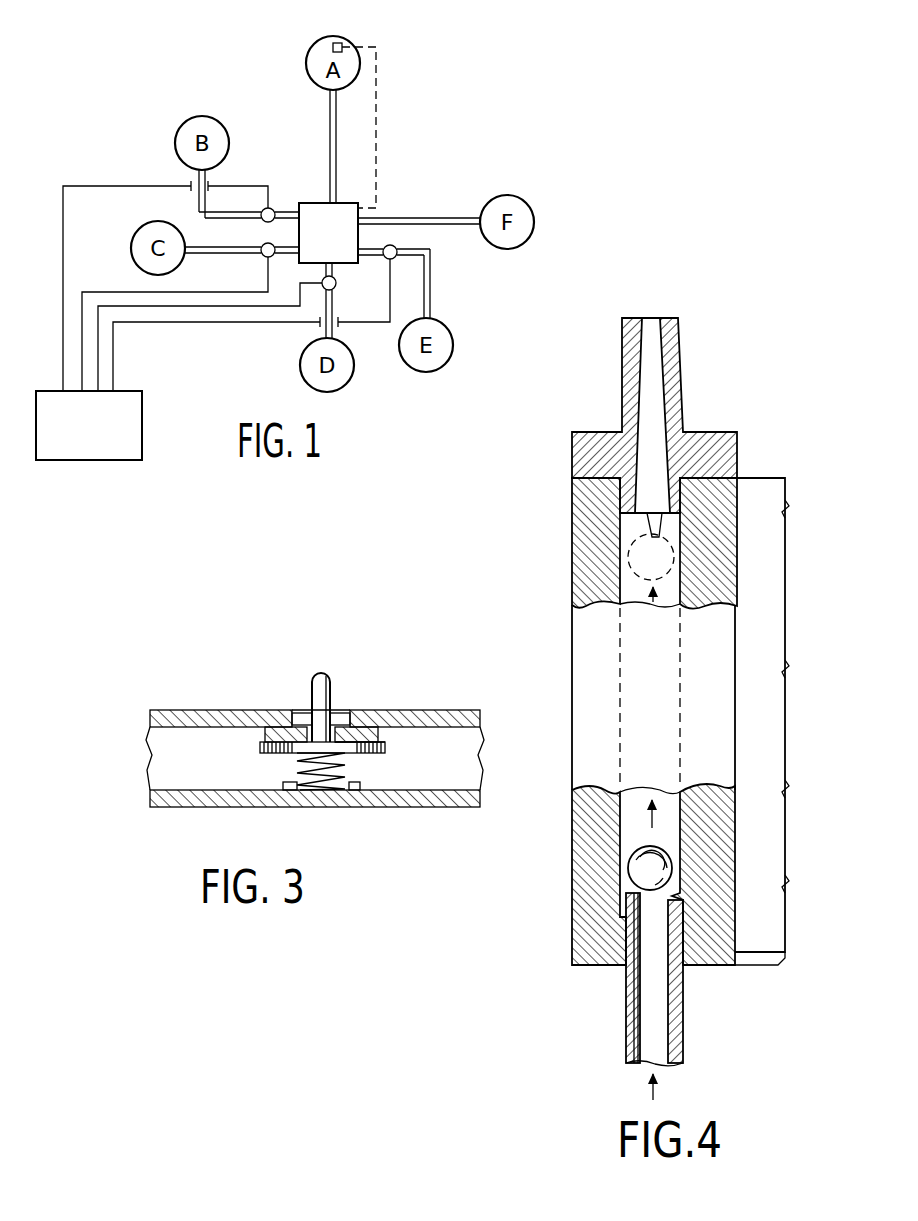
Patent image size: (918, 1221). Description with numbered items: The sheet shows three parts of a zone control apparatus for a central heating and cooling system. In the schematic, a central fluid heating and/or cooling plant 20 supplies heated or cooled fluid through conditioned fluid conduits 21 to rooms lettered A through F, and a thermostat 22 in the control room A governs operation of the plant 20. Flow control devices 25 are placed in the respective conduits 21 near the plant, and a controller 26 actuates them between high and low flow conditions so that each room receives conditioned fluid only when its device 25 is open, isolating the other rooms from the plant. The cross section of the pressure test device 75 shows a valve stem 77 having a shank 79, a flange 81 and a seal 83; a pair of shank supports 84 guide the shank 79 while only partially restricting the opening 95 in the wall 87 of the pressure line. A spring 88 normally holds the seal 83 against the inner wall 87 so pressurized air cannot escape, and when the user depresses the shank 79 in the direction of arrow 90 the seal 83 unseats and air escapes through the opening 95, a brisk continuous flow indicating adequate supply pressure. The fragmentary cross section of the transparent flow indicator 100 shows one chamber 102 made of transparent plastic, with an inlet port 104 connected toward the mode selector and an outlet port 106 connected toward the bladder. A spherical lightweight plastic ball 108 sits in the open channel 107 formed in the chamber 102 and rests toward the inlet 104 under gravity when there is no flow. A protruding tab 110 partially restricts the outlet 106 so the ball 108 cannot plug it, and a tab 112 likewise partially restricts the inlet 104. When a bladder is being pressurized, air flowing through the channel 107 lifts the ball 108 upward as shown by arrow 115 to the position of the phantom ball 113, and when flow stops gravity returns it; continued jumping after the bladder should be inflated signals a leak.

In FIG. 1, the central fluid heating and/or cooling plant 20 is at (312, 203).
In FIG. 1, the conditioned fluid conduits 21 is at (408, 218).
In FIG. 1, the thermostat 22 is at (333, 47).
In FIG. 1, the flow control devices 25 is at (262, 220).
In FIG. 1, the controller 26 is at (146, 398).
In FIG. 3, the pressure test device 75 is at (348, 684).
In FIG. 3, the valve stem 77 is at (333, 672).
In FIG. 3, the shank 79 is at (333, 700).
In FIG. 3, the flange 81 is at (375, 746).
In FIG. 3, the seal 83 is at (387, 744).
In FIG. 3, the shank supports 84 is at (290, 722).
In FIG. 3, the inner wall 87 is at (440, 711).
In FIG. 3, the spring 88 is at (300, 772).
In FIG. 3, the arrow 90 is at (321, 668).
In FIG. 3, the opening 95 is at (297, 725).
In FIG. 4, the transparent flow indicator 100 is at (745, 474).
In FIG. 4, the chamber 102 is at (745, 972).
In FIG. 4, the inlet port 104 is at (658, 1013).
In FIG. 4, the outlet port 106 is at (656, 352).
In FIG. 4, the open channel 107 is at (614, 661).
In FIG. 4, the spherical lightweight plastic ball 108 is at (632, 872).
In FIG. 4, the protruding tab 110 is at (650, 528).
In FIG. 4, the tab 112 is at (624, 913).
In FIG. 4, the phantom ball 113 is at (628, 557).
In FIG. 4, the arrow 115 is at (646, 822).